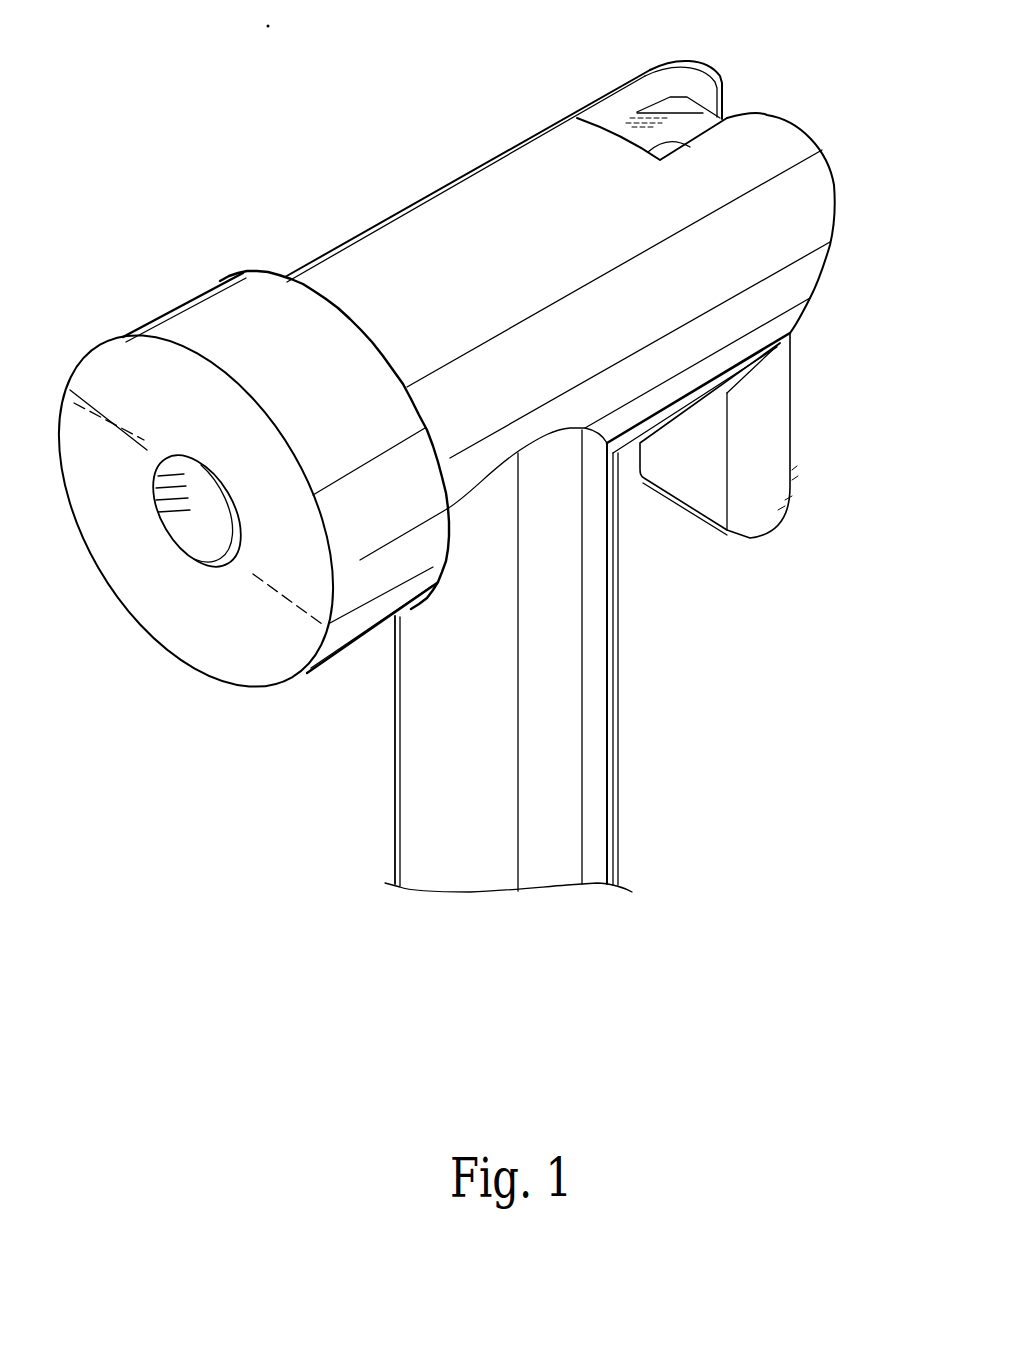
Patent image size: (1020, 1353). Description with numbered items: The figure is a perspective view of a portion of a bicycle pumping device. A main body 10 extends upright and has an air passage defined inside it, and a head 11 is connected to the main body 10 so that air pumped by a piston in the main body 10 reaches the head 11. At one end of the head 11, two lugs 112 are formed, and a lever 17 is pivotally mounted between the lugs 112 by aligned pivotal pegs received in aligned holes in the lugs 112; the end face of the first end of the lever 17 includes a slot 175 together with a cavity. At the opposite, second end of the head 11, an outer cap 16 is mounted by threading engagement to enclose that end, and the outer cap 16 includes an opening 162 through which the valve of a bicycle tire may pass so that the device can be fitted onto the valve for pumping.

The main body 10 is at (412, 797).
The head 11 is at (455, 202).
The outer cap 16 is at (192, 317).
The lever 17 is at (780, 453).
The lugs 112 is at (813, 150).
The opening 162 is at (200, 548).
The slot 175 is at (660, 148).